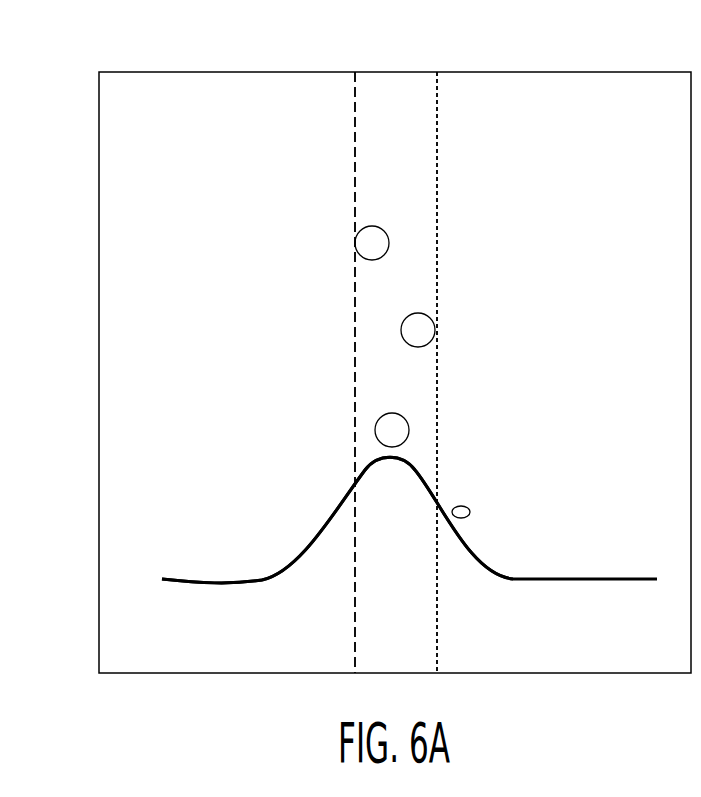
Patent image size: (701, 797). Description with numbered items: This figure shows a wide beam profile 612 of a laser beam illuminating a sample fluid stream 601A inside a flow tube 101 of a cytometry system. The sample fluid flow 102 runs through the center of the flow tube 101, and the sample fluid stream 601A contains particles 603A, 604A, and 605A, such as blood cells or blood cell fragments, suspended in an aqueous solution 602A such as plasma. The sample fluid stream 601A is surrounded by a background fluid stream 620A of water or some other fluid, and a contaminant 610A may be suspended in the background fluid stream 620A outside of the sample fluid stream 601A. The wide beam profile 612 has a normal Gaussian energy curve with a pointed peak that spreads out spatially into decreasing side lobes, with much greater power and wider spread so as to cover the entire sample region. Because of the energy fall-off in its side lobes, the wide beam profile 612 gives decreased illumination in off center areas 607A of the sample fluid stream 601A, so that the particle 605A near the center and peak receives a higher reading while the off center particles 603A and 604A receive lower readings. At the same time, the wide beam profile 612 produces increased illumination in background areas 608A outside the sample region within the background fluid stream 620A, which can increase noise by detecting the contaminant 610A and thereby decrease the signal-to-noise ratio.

The flow tube 101 is at (99, 145).
The sample fluid flow 102 is at (355, 363).
The sample fluid stream 601A is at (393, 82).
The aqueous solution 602A is at (432, 198).
The particle 603A is at (355, 243).
The particle 604A is at (436, 330).
The particle 605A is at (408, 425).
The off center areas 607A is at (423, 493).
The background areas 608A is at (320, 495).
The contaminant 610A is at (467, 506).
The wide beam profile 612 is at (203, 578).
The background fluid stream 620A is at (225, 172).